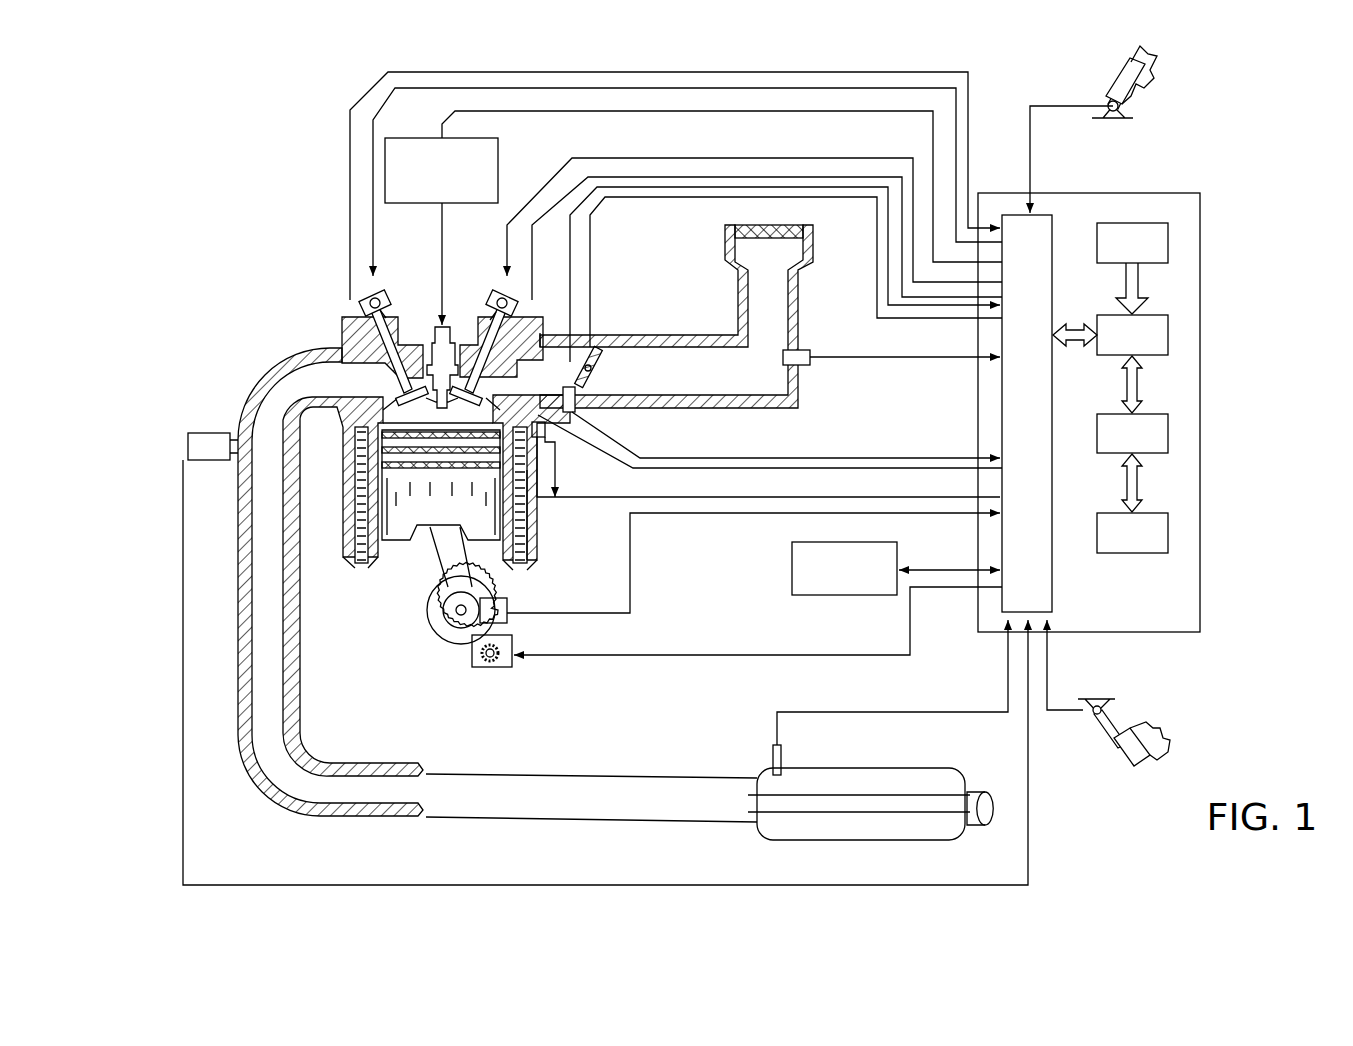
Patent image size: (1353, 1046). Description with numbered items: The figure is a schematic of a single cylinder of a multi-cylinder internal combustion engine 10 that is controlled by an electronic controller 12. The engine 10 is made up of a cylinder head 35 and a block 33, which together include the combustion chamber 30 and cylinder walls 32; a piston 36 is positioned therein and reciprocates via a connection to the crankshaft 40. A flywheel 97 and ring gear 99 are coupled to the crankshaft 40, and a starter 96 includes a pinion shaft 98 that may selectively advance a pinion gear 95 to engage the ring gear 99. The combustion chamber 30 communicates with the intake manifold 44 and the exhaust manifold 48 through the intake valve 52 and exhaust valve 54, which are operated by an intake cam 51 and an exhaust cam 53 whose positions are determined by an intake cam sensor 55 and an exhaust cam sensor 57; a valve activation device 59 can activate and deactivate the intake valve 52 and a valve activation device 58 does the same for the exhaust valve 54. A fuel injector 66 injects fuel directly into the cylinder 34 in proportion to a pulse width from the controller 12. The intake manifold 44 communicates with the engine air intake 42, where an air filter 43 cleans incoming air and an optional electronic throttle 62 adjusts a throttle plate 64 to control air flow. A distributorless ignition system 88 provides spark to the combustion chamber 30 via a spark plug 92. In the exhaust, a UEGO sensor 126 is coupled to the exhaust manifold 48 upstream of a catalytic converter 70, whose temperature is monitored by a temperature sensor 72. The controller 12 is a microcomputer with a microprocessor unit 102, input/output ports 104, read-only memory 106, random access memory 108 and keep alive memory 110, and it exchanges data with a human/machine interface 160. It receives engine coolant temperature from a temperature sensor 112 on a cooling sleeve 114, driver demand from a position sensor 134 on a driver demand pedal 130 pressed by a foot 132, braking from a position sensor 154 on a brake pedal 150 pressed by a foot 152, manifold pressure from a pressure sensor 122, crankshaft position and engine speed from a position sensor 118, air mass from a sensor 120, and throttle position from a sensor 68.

The internal combustion engine 10 is at (276, 270).
The electronic controller 12 is at (1194, 195).
The combustion chamber 30 is at (443, 420).
The cylinder walls 32 is at (388, 552).
The block 33 is at (338, 458).
The cylinder 34 is at (405, 552).
The cylinder head 35 is at (338, 316).
The piston 36 is at (428, 512).
The crankshaft 40 is at (440, 636).
The engine air intake 42 is at (716, 247).
The air filter 43 is at (780, 242).
The intake manifold 44 is at (542, 384).
The exhaust manifold 48 is at (298, 392).
The intake cam 51 is at (506, 292).
The intake valve 52 is at (482, 372).
The exhaust cam 53 is at (380, 294).
The exhaust valve 54 is at (392, 384).
The intake cam sensor 55 is at (520, 312).
The exhaust cam sensor 57 is at (385, 312).
The valve activation device 58 is at (386, 307).
The valve activation device 59 is at (500, 312).
The electronic throttle 62 is at (598, 363).
The throttle plate 64 is at (586, 382).
The fuel injector 66 is at (547, 432).
The throttle position sensor 68 is at (541, 348).
The catalytic converter 70 is at (792, 768).
The temperature sensor 72 is at (782, 748).
The distributorless ignition system 88 is at (400, 138).
The spark plug 92 is at (446, 325).
The pinion gear 95 is at (494, 668).
The starter 96 is at (508, 667).
The flywheel 97 is at (426, 622).
The pinion shaft 98 is at (480, 664).
The ring gear 99 is at (448, 642).
The microprocessor unit 102 is at (1170, 340).
The input/output ports 104 is at (1056, 216).
The read-only memory 106 is at (1170, 240).
The random access memory 108 is at (1170, 434).
The keep alive memory 110 is at (1170, 536).
The temperature sensor 112 is at (552, 458).
The cooling sleeve 114 is at (527, 500).
The position sensor 118 is at (507, 600).
The air mass sensor 120 is at (808, 352).
The pressure sensor 122 is at (576, 406).
The Universal Exhaust Gas Oxygen (UEGO) sensor 126 is at (188, 438).
The driver demand pedal 130 is at (1100, 102).
The foot 132 is at (1150, 70).
The position sensor 134 is at (1134, 106).
The brake pedal 150 is at (1124, 748).
The foot 152 is at (1146, 722).
The position sensor 154 is at (1094, 708).
The human/machine interface 160 is at (896, 568).